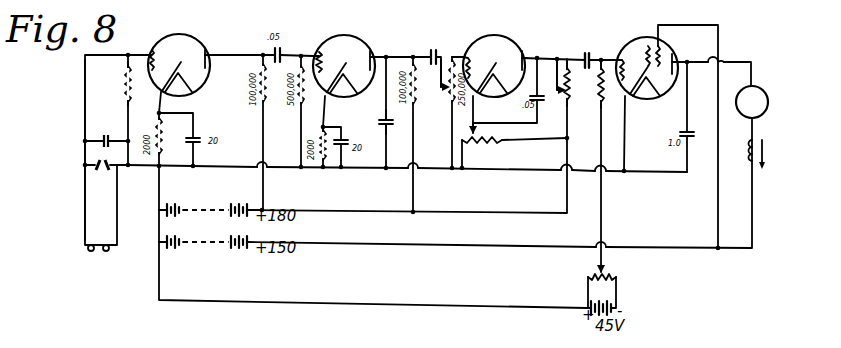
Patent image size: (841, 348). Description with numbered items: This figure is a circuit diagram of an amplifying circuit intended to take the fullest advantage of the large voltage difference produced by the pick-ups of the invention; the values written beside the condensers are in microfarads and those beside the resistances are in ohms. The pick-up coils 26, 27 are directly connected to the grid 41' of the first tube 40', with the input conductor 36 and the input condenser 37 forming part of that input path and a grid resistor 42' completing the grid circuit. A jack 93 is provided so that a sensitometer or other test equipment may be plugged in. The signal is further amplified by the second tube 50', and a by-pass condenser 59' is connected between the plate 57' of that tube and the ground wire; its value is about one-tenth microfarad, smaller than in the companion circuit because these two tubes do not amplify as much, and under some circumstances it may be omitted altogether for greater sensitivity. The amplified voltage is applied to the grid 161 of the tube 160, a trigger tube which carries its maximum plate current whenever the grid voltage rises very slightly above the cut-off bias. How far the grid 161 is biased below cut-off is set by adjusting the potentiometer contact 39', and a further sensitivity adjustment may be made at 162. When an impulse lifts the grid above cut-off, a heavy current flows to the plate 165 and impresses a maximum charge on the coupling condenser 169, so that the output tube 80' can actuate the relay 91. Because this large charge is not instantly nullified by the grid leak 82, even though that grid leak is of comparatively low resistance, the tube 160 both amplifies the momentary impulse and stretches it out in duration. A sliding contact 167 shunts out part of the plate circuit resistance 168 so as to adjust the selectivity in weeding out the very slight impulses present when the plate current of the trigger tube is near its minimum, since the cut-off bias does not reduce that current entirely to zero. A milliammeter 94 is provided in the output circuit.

The coil 26 is at (90, 252).
The coil 27 is at (107, 252).
The input conductor 36 is at (85, 132).
The input coupling condenser 37 is at (99, 144).
The jack 93 is at (98, 171).
The tube 40' is at (191, 55).
The grid 41' is at (140, 43).
The grid resistor 42' is at (118, 96).
The tube 50' is at (335, 48).
The plate 57' is at (388, 44).
The by-pass condenser 59' is at (371, 117).
The tube 160 is at (509, 42).
The grid 161 is at (469, 52).
The sensitivity adjustment 162 is at (442, 91).
The plate 165 is at (521, 60).
The potentiometer contact 39' is at (460, 138).
The sliding contact 167 is at (560, 56).
The plate circuit resistance 168 is at (568, 101).
The coupling condenser 169 is at (590, 58).
The grid leak 82 is at (603, 101).
The tube 80' is at (640, 53).
The milliammeter 94 is at (760, 87).
The relay 91 is at (748, 163).